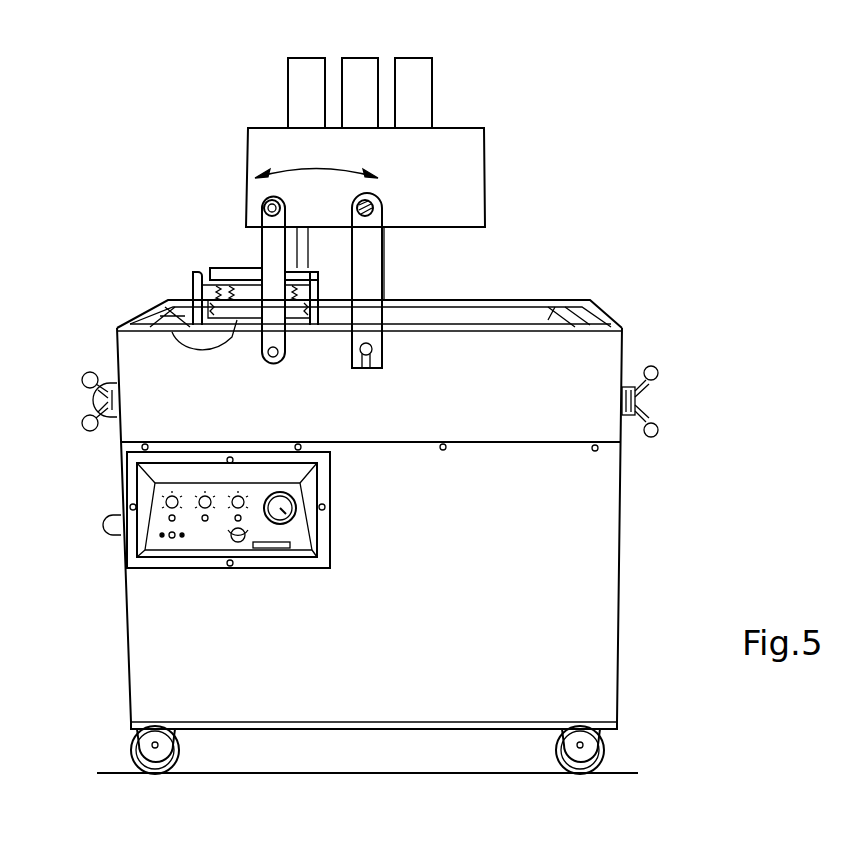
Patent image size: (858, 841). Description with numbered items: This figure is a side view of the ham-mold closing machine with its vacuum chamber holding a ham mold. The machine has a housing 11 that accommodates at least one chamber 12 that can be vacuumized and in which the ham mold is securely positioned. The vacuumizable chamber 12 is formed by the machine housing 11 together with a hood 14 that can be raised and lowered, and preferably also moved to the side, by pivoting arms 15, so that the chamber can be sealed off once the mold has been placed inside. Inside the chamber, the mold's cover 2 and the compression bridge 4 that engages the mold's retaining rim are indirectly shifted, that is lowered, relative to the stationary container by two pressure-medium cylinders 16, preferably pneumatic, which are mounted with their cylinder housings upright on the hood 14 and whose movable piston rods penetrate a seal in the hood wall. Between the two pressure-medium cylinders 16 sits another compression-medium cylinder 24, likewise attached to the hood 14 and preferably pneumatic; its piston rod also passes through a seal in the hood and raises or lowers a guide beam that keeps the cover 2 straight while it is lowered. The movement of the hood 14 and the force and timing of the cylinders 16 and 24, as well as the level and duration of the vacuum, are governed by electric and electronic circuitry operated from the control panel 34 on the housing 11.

The cover 2 is at (172, 332).
The compression bridge 4 is at (232, 255).
The housing 11 is at (570, 395).
The chamber 12 is at (152, 310).
The hood 14 is at (455, 172).
The pivoting arms 15 is at (273, 308).
The pressure-medium cylinders 16 is at (307, 98).
The compression-medium cylinder 24 is at (355, 92).
The control panel 34 is at (295, 536).